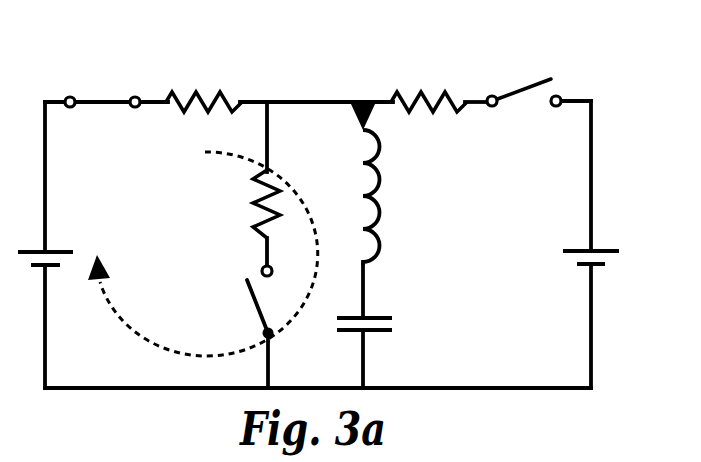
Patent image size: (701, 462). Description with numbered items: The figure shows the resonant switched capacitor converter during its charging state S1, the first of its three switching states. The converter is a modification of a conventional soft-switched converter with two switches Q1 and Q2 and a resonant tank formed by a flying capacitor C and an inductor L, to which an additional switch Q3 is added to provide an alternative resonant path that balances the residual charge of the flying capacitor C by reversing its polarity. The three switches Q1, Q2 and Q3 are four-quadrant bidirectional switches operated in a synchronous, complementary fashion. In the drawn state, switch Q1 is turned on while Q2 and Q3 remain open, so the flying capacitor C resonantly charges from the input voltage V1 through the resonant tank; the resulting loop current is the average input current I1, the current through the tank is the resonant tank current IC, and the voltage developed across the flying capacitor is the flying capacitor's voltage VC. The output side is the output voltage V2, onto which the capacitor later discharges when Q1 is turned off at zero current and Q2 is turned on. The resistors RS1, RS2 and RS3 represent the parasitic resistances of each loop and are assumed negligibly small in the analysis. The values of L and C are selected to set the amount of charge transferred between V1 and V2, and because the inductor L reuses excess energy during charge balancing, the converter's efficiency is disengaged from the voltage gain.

The switch Q1 is at (102, 120).
The switch Q2 is at (524, 111).
The additional switch Q3 is at (234, 302).
The resistor RS1 is at (204, 119).
The resistor RS2 is at (429, 121).
The resistor RS3 is at (237, 204).
The input voltage V1 is at (58, 236).
The output voltage V2 is at (576, 232).
The inductor L is at (352, 197).
The flying capacitor C is at (360, 300).
The charging state S1 is at (187, 241).
The resonant tank current IC is at (378, 121).
The average input current I1 is at (203, 254).
The flying capacitor's voltage VC is at (412, 322).